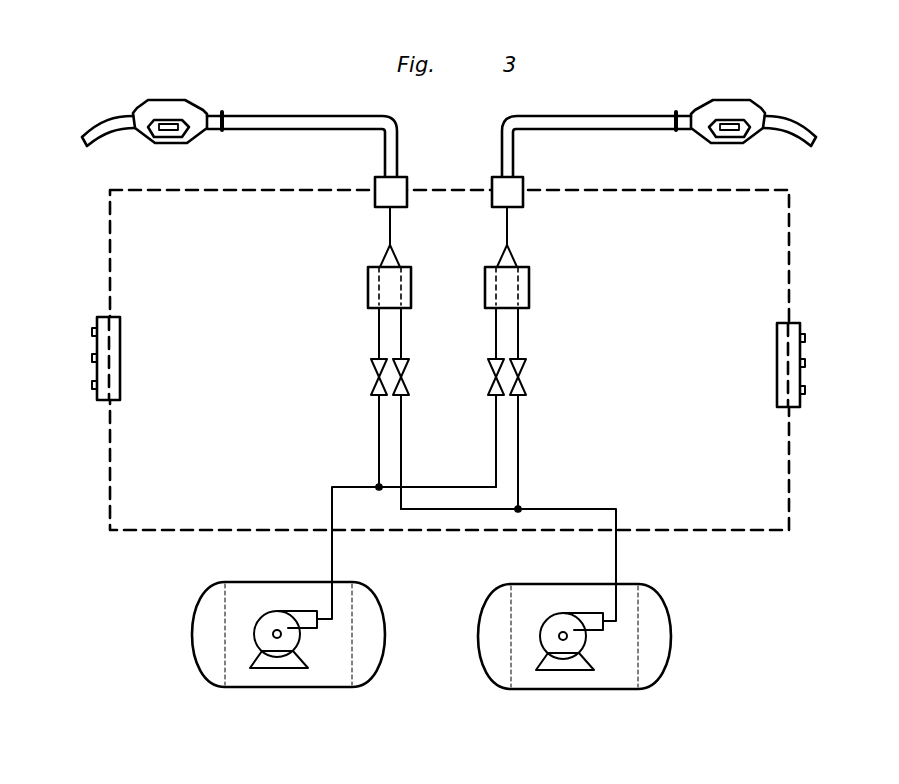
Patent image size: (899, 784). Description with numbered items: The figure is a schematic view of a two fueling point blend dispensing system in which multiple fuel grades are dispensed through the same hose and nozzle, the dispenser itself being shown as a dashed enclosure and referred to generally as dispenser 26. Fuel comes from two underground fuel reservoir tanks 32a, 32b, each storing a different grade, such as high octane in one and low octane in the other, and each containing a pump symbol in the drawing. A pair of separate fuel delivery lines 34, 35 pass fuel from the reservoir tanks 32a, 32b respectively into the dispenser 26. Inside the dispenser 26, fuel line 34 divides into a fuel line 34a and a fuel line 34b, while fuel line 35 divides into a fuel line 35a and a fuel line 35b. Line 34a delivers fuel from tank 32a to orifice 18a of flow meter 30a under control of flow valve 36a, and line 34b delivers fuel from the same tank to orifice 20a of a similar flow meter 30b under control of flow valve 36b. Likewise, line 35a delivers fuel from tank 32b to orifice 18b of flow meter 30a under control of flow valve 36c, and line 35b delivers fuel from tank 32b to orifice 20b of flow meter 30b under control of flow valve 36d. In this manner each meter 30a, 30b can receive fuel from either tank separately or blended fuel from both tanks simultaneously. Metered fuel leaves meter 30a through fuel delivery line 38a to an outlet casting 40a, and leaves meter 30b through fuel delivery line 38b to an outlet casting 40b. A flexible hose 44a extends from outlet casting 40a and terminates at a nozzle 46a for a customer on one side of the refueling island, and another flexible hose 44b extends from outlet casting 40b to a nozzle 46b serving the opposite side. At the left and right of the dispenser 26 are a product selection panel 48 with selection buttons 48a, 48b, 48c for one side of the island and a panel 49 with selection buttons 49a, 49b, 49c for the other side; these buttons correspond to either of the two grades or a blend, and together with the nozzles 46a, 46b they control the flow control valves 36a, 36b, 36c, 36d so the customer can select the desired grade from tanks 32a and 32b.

The two fueling point dispenser 26 is at (688, 546).
The nozzle 46a is at (168, 100).
The nozzle 46b is at (733, 103).
The flexible hose 44a is at (292, 116).
The flexible hose 44b is at (602, 116).
The outlet casting 40a is at (375, 185).
The outlet casting 40b is at (523, 185).
The fuel delivery line 38a is at (390, 232).
The fuel delivery line 38b is at (507, 232).
The flow meter 30a is at (368, 282).
The flow meter 30b is at (529, 282).
The orifice 18a is at (376, 294).
The orifice 18b is at (407, 278).
The orifice 20a is at (485, 300).
The orifice 20b is at (529, 300).
The flow valve 36a is at (371, 378).
The flow valve 36b is at (488, 378).
The flow valve 36c is at (409, 378).
The flow valve 36d is at (526, 378).
The fuel line 34a is at (379, 445).
The fuel line 34b is at (496, 445).
The fuel line 35a is at (401, 437).
The fuel line 35b is at (518, 437).
The fuel delivery line 34 is at (332, 548).
The fuel delivery line 35 is at (616, 552).
The underground fuel reservoir tank 32a is at (290, 688).
The underground fuel reservoir tank 32b is at (572, 692).
The product selection panel 48 is at (131, 356).
The selection button 48a is at (92, 332).
The selection button 48b is at (92, 358).
The selection button 48c is at (92, 385).
The product selection panel 49 is at (767, 356).
The selection button 49a is at (805, 338).
The selection button 49b is at (805, 363).
The selection button 49c is at (805, 390).